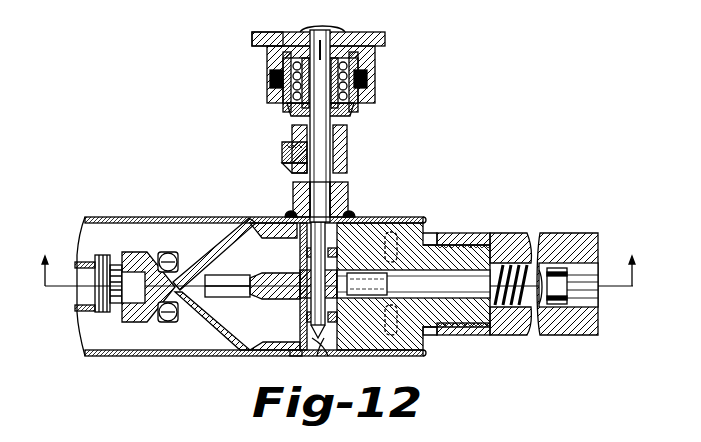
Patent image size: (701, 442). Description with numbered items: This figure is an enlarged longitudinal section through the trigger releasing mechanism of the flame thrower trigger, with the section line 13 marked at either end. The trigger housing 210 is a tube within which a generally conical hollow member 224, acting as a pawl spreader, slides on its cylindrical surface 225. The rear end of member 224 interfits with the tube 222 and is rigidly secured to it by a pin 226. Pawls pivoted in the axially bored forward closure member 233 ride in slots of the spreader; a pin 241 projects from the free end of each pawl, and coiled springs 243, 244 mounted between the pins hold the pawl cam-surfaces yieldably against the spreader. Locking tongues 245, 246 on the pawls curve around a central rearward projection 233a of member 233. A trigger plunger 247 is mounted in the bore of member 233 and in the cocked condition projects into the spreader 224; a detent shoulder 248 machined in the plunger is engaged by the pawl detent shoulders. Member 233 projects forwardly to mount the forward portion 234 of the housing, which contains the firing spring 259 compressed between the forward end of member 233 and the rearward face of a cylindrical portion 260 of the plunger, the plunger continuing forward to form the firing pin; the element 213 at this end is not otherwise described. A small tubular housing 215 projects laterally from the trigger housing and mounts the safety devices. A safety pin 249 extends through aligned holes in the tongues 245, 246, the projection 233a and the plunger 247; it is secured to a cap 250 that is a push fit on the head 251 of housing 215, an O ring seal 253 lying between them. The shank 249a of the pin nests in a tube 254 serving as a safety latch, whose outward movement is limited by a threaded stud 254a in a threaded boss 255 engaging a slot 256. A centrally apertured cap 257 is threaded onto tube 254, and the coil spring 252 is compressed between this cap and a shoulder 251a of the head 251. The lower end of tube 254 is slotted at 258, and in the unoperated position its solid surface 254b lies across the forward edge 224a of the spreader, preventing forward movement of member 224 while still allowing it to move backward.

The section line 13- 13 is at (338, 261).
The trigger housing 210 is at (148, 218).
The tube 213 is at (587, 296).
The small tubular housing 215 is at (333, 190).
The tube 222 is at (88, 262).
The conical hollow member 224 is at (219, 327).
The forward edge 224a is at (286, 214).
The cylindrical surface 225 is at (262, 343).
The pin 226 is at (98, 318).
The forward closure member 233 is at (484, 323).
The central rearward projection 233a is at (300, 268).
The forward portion of the housing 234 is at (452, 233).
The pin 241 is at (171, 254).
The coiled spring 243 is at (160, 253).
The coiled spring 244 is at (160, 321).
The locking tongue 245 is at (307, 251).
The locking tongue 246 is at (296, 354).
The trigger plunger 247 is at (425, 329).
The detent shoulder 248 is at (275, 298).
The safety pin 249 is at (332, 352).
The shank 249a is at (318, 153).
The cap 250 is at (367, 55).
The head 251 is at (356, 112).
The shoulder 251a is at (288, 111).
The coil spring 252 is at (353, 108).
The O ring seal 253 is at (367, 79).
The tube 254 is at (292, 176).
The threaded stud 254a is at (290, 165).
The solid surface 254b is at (349, 212).
The threaded boss 255 is at (292, 134).
The slot 256 is at (290, 151).
The centrally apertured cap 257 is at (268, 54).
The slot 258 is at (331, 200).
The firing spring 259 is at (516, 309).
The cylindrical portion 260 is at (563, 336).